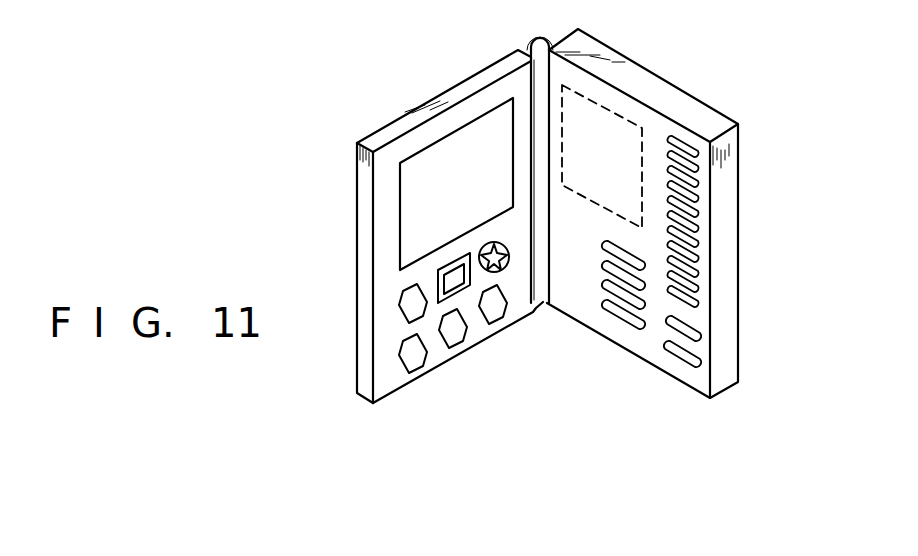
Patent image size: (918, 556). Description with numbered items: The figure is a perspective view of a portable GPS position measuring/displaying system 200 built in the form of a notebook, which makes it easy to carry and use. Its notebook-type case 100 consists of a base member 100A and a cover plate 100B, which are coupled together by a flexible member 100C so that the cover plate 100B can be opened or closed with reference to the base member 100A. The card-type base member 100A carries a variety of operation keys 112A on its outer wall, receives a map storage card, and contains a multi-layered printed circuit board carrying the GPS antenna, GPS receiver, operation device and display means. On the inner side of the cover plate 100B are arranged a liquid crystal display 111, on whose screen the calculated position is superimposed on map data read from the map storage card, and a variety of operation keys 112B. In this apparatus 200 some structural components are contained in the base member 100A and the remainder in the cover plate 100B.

The notebook-type case 100 is at (561, 216).
The base member 100A is at (738, 220).
The cover plate 100B is at (448, 90).
The flexible member 100C is at (540, 40).
The liquid crystal display 111 is at (423, 215).
The operation keys 112A is at (697, 284).
The operation keys 112B is at (455, 334).
The GPS position measuring/displaying system 200 is at (660, 80).